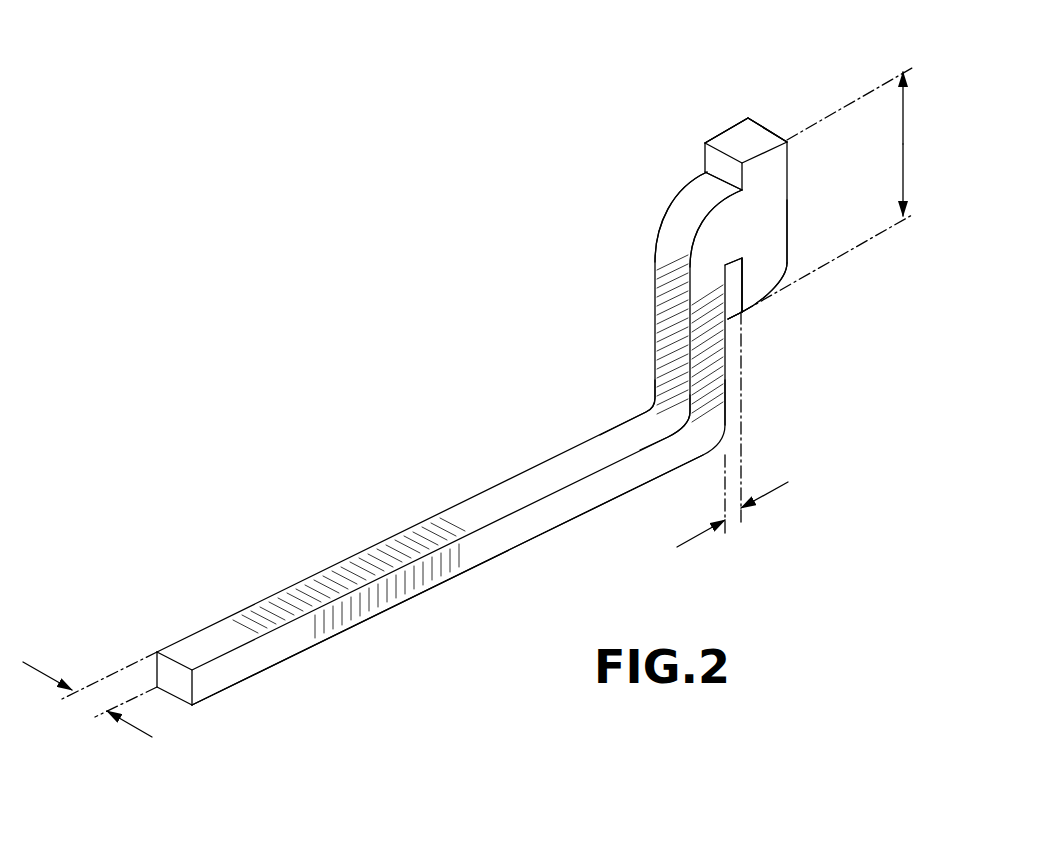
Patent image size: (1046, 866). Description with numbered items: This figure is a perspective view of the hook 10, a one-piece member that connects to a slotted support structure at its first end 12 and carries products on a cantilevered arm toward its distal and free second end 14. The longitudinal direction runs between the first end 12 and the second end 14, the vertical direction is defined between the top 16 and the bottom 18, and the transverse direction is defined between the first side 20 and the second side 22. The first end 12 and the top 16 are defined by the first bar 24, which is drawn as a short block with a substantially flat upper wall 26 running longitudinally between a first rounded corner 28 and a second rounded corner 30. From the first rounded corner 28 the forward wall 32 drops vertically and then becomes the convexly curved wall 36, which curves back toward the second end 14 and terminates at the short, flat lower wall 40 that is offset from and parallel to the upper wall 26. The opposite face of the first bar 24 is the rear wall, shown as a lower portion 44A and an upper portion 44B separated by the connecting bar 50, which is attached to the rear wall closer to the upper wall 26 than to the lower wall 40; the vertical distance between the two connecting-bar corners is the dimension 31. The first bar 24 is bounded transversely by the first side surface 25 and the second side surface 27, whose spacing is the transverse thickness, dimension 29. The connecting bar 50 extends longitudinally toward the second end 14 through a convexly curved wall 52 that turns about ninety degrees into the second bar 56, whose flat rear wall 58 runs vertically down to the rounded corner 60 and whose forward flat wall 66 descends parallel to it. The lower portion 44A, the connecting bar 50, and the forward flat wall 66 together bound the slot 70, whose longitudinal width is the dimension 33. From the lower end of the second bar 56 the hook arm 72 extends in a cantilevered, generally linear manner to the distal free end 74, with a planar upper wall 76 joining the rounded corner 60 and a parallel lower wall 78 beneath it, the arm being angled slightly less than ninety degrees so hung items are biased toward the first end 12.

The hook 10 is at (372, 398).
The first end 12 is at (797, 108).
The second end 14 is at (117, 750).
The top 16 is at (342, 538).
The bottom 18 is at (327, 664).
The first side 20 is at (383, 637).
The second side 22 is at (262, 580).
The first bar 24 is at (823, 262).
The first side surface 25 is at (775, 230).
The upper wall 26 is at (750, 134).
The second side surface 27 is at (712, 147).
The first rounded corner 28 is at (754, 128).
The transverse thickness dimension 29 is at (33, 668).
The second rounded corner 30 is at (711, 150).
The vertical distance dimension 31 is at (901, 132).
The forward wall 32 is at (788, 176).
The slot thickness dimension 33 is at (778, 488).
The convexly curved wall 36 is at (783, 272).
The lower wall 40 is at (744, 314).
The lower portion of rear wall 44A is at (732, 295).
The upper portion of rear wall 44B is at (722, 174).
The connecting bar 50 is at (735, 230).
The convexly curved wall 52 is at (688, 218).
The second bar 56 is at (598, 334).
The flat wall 58 is at (665, 360).
The rounded corner 60 is at (660, 415).
The forward flat wall 66 is at (725, 397).
The slot 70 is at (727, 284).
The hook arm 72 is at (470, 510).
The distal free end 74 is at (180, 690).
The upper wall 76 is at (215, 640).
The lower wall 78 is at (433, 592).